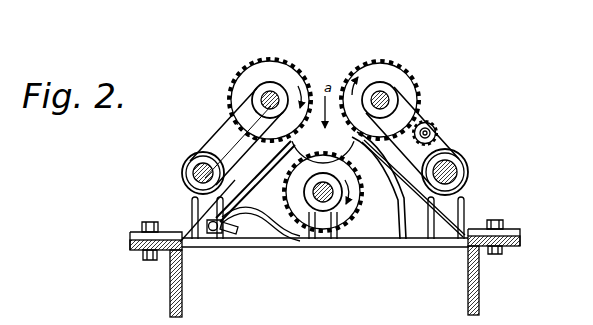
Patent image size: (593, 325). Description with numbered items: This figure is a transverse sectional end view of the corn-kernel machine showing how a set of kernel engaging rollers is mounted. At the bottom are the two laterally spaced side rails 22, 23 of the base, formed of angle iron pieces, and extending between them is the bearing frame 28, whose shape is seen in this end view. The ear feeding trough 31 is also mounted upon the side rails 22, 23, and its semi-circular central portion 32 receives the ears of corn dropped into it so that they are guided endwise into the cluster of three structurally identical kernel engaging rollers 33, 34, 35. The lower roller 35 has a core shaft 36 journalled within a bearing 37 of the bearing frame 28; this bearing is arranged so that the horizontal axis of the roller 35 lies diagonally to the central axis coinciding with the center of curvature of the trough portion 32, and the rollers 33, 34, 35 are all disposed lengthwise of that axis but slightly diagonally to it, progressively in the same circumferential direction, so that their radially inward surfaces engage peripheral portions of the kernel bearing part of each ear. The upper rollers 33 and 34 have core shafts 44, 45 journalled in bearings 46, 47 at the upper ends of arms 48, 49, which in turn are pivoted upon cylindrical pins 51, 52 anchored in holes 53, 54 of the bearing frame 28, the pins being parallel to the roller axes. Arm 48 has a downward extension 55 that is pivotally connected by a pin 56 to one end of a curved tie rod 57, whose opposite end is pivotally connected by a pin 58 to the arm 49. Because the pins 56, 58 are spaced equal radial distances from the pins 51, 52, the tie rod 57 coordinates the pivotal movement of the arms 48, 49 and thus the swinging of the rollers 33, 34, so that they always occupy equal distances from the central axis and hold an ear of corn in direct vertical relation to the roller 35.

The side rail 22 is at (480, 284).
The side rail 23 is at (170, 292).
The bearing frame 28 is at (380, 250).
The ear feeding trough 31 is at (240, 148).
The semi-circular central portion of the trough 32 is at (261, 197).
The kernel engaging roller 33 is at (269, 61).
The kernel engaging roller 34 is at (388, 62).
The kernel engaging roller 35 is at (372, 212).
The core shaft 36 is at (336, 215).
The bearing 37 is at (320, 215).
The core shaft 44 is at (263, 96).
The core shaft 45 is at (390, 93).
The bearing 46 is at (262, 100).
The bearing 47 is at (392, 100).
The arm 48 is at (234, 130).
The arm 49 is at (432, 124).
The pin 51 is at (190, 167).
The pin 52 is at (455, 167).
The hole 53 is at (183, 178).
The hole 54 is at (450, 175).
The downward extension 55 is at (238, 230).
The pin 56 is at (209, 224).
The curved tie rod 57 is at (384, 190).
The pin 58 is at (438, 133).